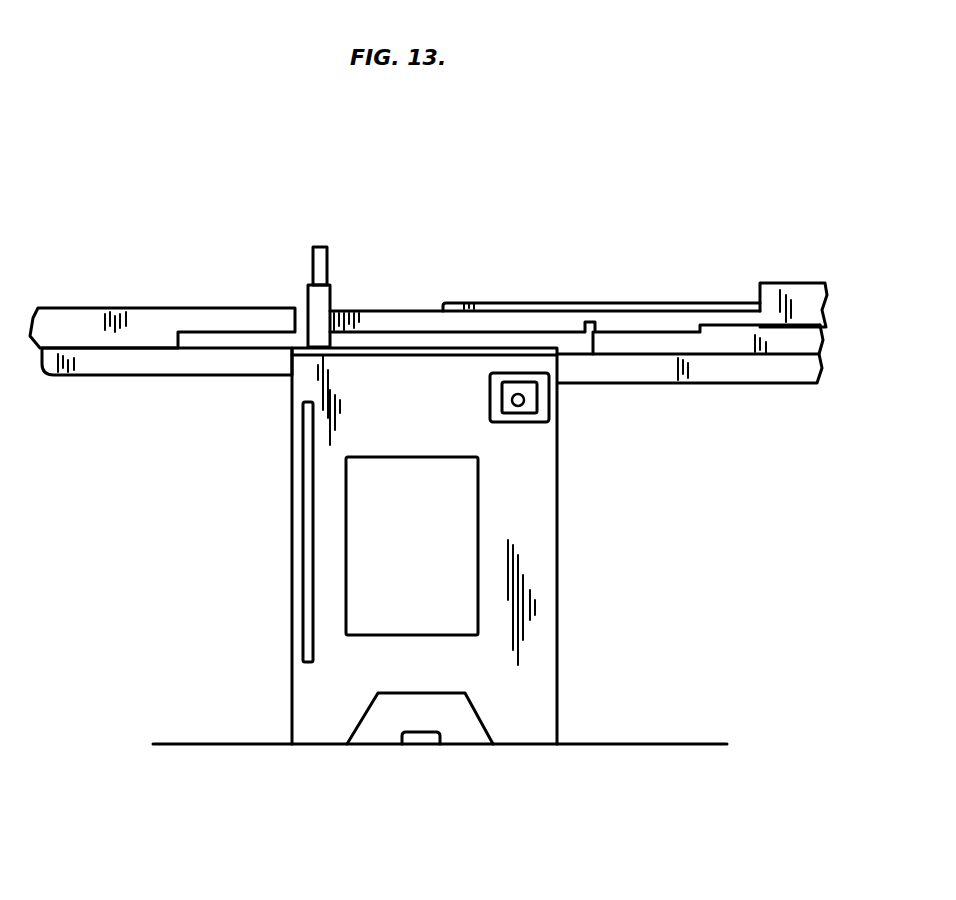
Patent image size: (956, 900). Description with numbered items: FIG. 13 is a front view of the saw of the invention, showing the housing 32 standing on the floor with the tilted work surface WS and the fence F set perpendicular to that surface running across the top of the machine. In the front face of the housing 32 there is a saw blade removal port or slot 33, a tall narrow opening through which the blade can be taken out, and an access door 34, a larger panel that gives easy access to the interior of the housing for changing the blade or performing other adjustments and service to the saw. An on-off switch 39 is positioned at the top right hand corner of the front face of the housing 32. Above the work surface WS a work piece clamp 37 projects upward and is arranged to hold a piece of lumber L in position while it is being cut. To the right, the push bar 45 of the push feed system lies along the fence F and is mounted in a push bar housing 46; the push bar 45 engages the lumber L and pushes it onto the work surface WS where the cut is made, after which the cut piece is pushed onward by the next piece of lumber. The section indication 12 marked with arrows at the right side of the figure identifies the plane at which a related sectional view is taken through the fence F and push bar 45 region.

The section line 12- 12 is at (643, 403).
The housing 32 is at (290, 568).
The saw blade removal port or slot 33 is at (307, 498).
The access door 34 is at (450, 490).
The work piece clamp 37 is at (327, 270).
The on-off switch 39 is at (528, 402).
The push bar 45 is at (640, 343).
The push bar housing 46 is at (742, 332).
The lumber L is at (256, 334).
The fence F is at (385, 318).
The work surface WS is at (368, 353).